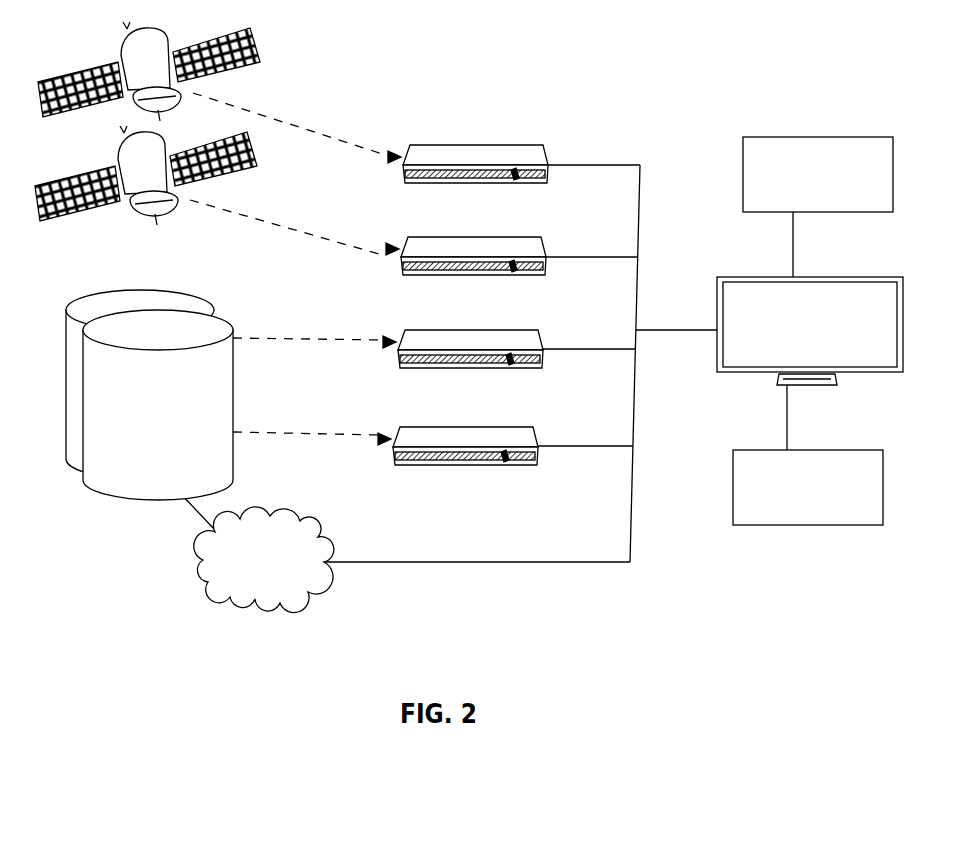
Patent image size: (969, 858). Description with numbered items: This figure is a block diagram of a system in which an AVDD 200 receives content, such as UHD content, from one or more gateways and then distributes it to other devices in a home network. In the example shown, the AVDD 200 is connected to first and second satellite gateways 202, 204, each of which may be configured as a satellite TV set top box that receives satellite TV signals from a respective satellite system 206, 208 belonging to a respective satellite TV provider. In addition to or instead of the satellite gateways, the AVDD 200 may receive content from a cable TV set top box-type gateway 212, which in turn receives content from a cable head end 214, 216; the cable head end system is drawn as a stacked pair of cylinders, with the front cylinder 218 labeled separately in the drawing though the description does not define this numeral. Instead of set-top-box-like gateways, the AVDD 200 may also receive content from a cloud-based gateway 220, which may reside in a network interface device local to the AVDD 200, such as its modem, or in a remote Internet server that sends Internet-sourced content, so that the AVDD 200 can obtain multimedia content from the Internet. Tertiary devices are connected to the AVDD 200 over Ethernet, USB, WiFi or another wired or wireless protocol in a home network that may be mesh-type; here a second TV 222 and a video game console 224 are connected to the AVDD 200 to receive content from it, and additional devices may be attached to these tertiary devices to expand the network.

The AVDD 200 is at (825, 278).
The first satellite gateway 202 is at (513, 145).
The second satellite gateway 204 is at (512, 237).
The satellite system 206 is at (258, 38).
The satellite system 208 is at (253, 150).
The cable TV set top box-type gateway 212 is at (508, 330).
The cable head end 214 is at (505, 427).
The cable head end 216 is at (192, 302).
The cable headend system server 218 is at (220, 322).
The cloud-based gateway 220 is at (310, 527).
The second TV 222 is at (830, 137).
The video game console 224 is at (818, 450).